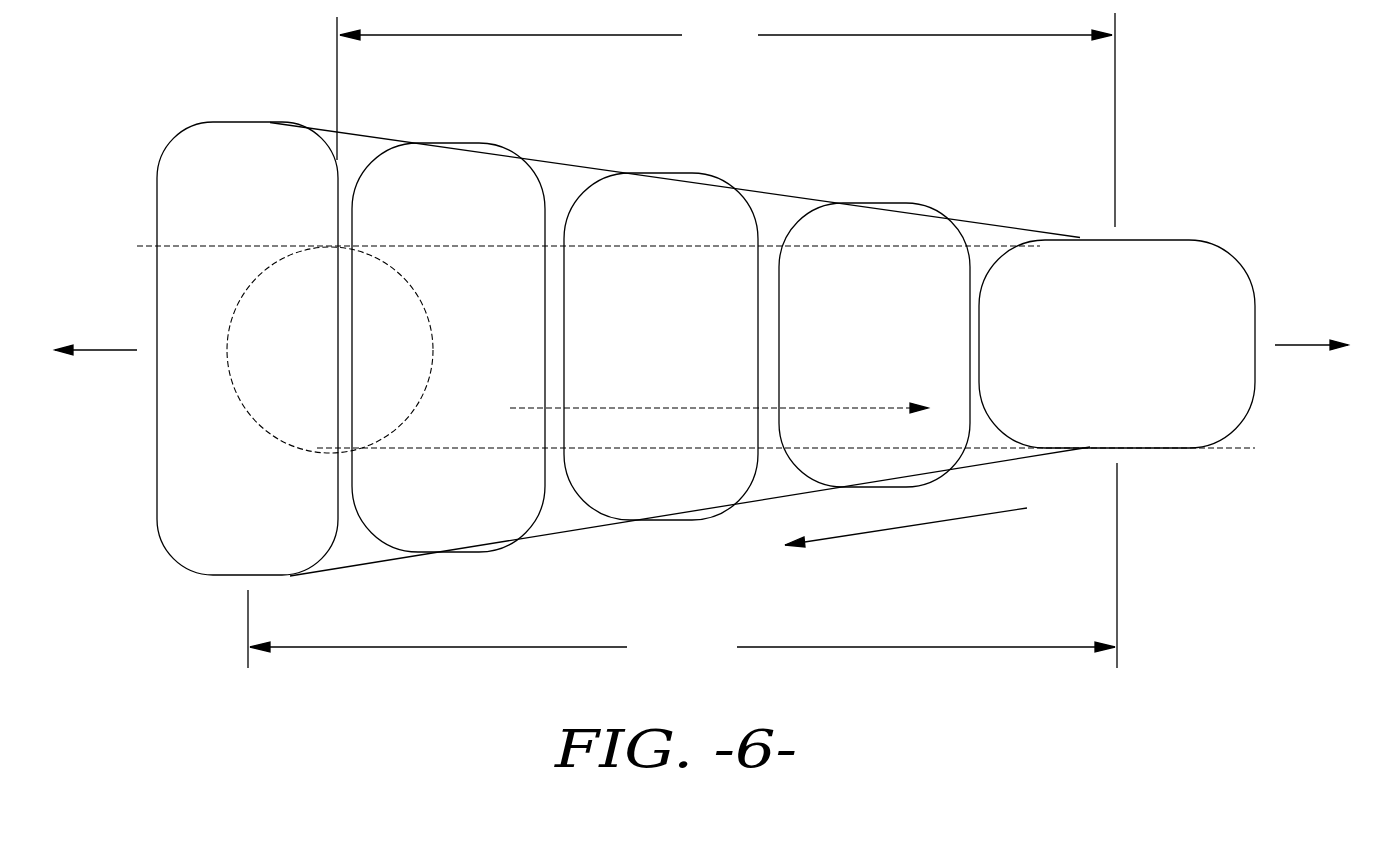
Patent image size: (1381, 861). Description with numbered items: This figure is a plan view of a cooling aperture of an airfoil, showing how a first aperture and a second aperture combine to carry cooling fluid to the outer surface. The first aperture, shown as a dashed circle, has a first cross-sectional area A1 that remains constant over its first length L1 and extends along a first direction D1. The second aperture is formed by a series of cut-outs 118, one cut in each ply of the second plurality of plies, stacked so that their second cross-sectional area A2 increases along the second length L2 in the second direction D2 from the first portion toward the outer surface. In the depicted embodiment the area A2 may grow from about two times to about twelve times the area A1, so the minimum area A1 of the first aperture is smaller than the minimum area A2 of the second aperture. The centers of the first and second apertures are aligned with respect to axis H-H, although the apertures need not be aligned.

The cut-out 118 is at (263, 160).
The first cross-sectional area A1 is at (270, 313).
The second cross-sectional area A2 is at (220, 465).
The first direction D1 is at (631, 398).
The second direction D2 is at (903, 532).
The axis H- H is at (701, 347).
The first length L1 is at (726, 120).
The second length L2 is at (682, 567).